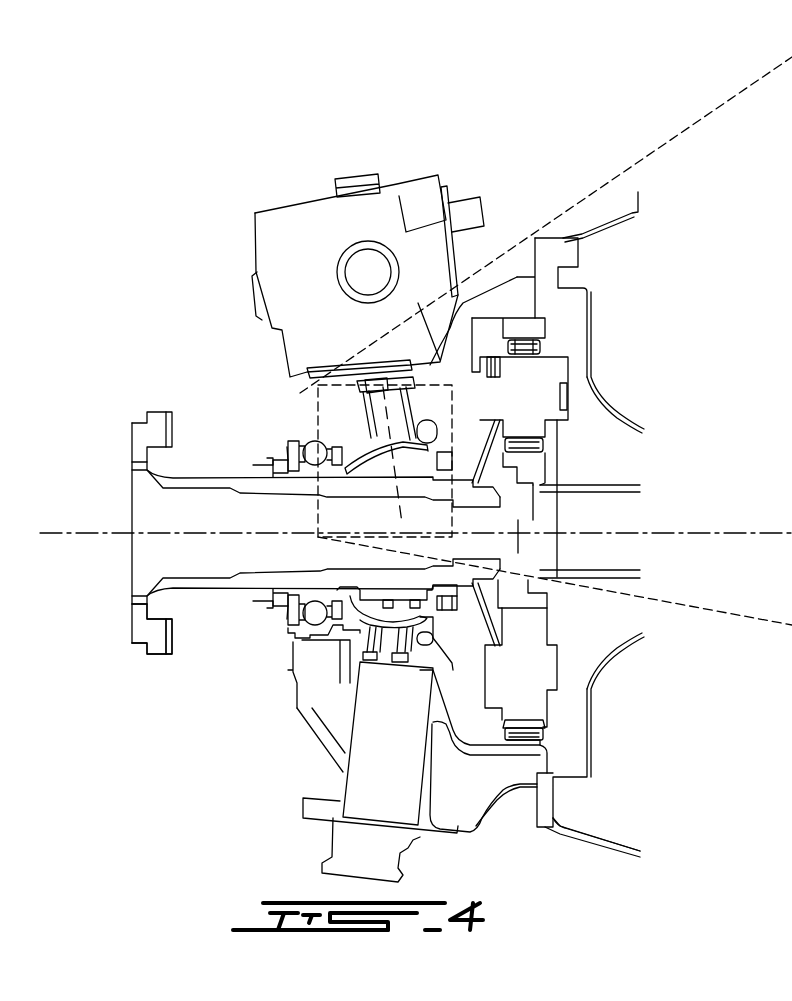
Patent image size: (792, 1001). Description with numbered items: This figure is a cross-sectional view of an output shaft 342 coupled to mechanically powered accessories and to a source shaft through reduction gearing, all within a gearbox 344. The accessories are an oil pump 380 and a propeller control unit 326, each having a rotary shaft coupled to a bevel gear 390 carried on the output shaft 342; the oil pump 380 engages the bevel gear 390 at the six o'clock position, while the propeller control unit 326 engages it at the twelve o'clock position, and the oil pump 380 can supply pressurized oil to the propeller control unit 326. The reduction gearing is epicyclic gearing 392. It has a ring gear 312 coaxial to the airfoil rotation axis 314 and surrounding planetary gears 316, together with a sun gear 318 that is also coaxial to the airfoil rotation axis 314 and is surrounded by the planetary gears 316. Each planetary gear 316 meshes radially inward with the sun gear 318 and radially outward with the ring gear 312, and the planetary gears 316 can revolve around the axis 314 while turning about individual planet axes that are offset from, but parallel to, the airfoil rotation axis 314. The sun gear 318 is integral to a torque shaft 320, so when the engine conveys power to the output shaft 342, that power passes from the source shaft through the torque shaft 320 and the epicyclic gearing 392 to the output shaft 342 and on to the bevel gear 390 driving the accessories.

The ring gear 312 is at (527, 330).
The airfoil rotation axis 314 is at (80, 533).
The planetary gears 316 is at (560, 392).
The sun gear 318 is at (545, 467).
The torque shaft 320 is at (627, 577).
The propeller control unit 326 is at (478, 156).
The output shaft 342 is at (195, 480).
The gearbox 344 is at (493, 303).
The oil pump 380 is at (626, 755).
The bevel gear 390 is at (791, 320).
The epicyclic gearing 392 is at (582, 405).